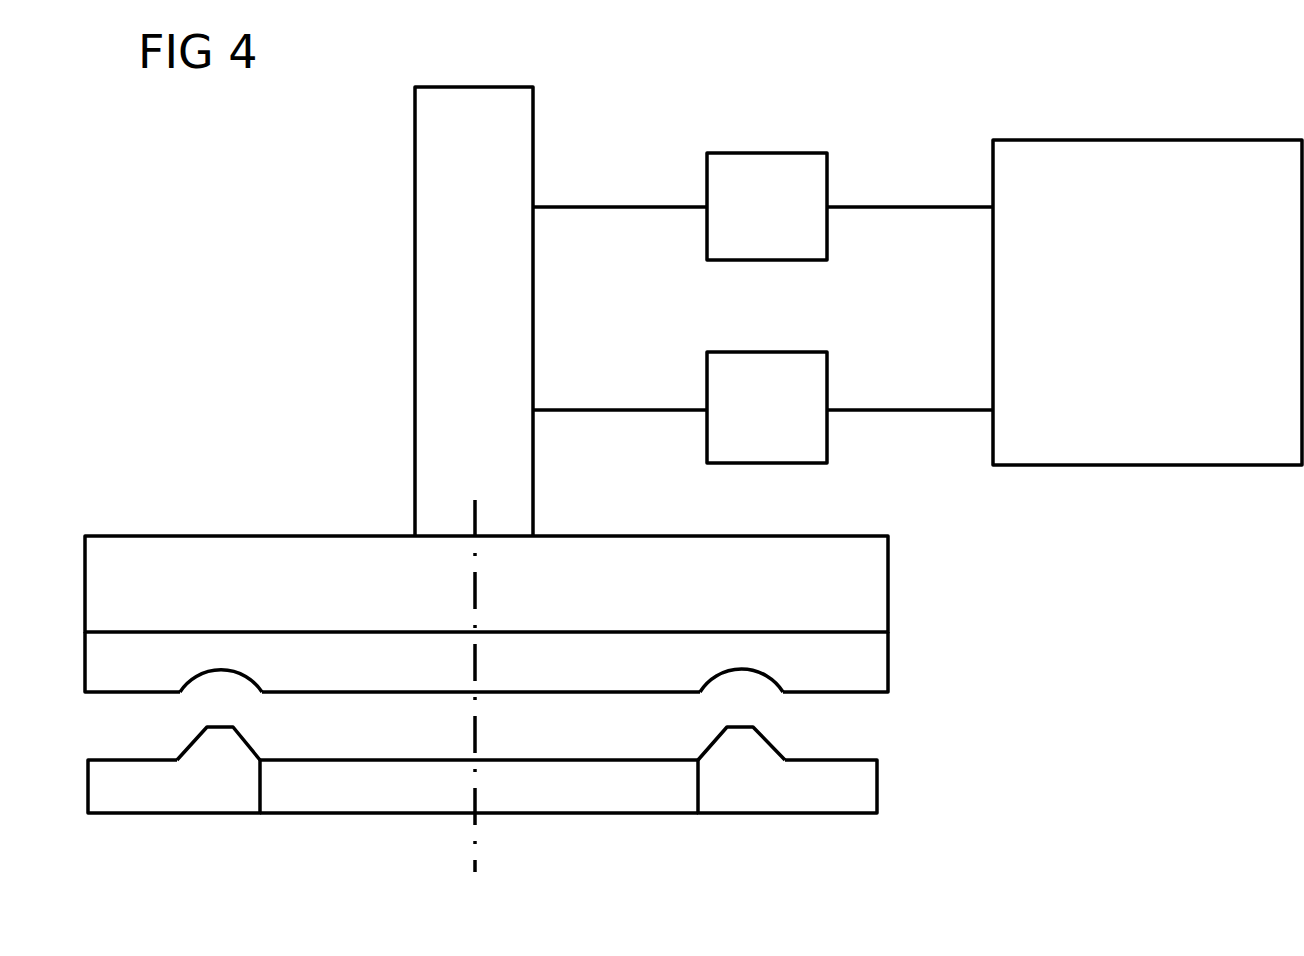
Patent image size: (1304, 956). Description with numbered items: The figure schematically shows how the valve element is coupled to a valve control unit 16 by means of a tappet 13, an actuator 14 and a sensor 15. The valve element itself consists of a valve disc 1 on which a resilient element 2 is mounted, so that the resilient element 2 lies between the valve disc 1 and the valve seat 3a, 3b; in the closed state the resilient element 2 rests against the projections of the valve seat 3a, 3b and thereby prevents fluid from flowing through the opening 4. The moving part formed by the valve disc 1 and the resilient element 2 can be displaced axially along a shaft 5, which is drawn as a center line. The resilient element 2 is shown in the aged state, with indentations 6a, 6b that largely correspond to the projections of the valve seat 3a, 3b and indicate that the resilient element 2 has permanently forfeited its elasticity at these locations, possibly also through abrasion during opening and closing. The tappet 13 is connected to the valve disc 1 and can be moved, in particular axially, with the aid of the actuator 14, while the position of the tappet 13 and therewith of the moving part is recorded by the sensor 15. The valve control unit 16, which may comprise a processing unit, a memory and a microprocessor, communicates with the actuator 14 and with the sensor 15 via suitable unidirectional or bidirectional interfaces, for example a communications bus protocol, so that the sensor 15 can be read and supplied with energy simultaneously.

The valve disc 1 is at (486, 584).
The resilient element 2 is at (486, 662).
The valve seat 3a is at (174, 787).
The valve seat 3b is at (787, 787).
The opening 4 is at (479, 787).
The shaft 5 is at (475, 713).
The indentation 6a is at (219, 715).
The indentation 6b is at (741, 714).
The tappet 13 is at (474, 311).
The actuator 14 is at (763, 206).
The sensor 15 is at (763, 407).
The valve control unit 16 is at (1147, 302).